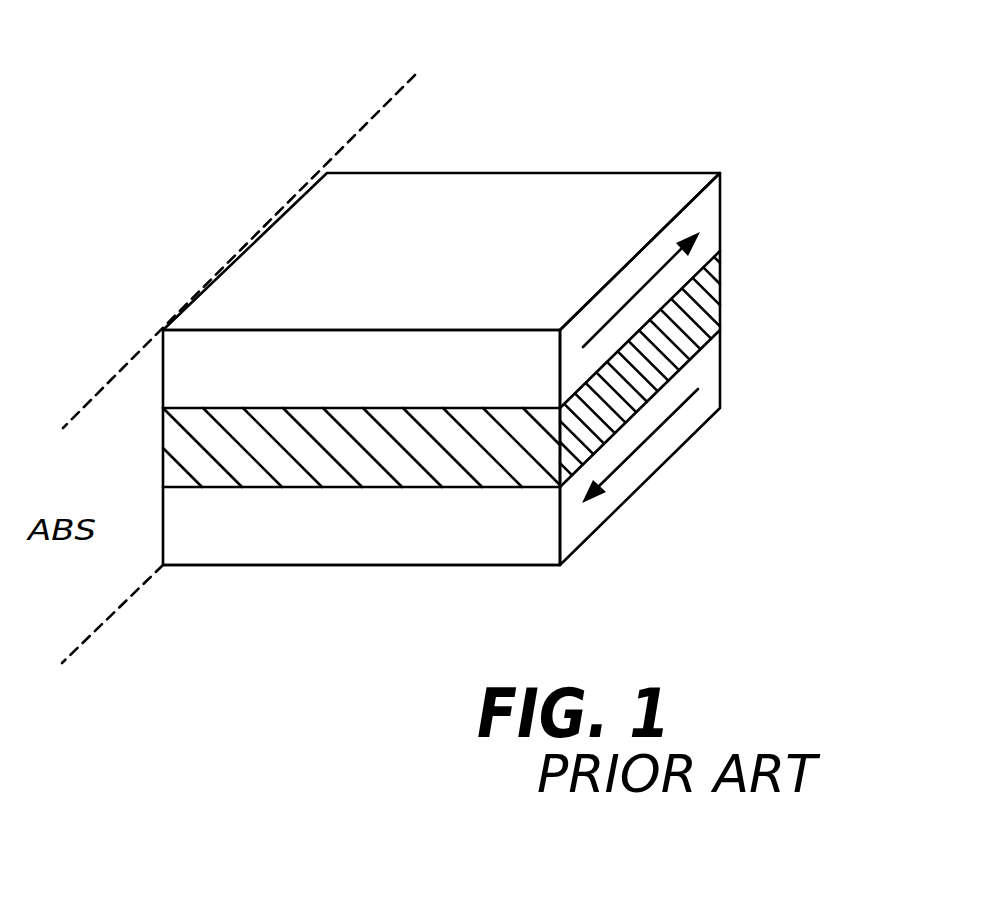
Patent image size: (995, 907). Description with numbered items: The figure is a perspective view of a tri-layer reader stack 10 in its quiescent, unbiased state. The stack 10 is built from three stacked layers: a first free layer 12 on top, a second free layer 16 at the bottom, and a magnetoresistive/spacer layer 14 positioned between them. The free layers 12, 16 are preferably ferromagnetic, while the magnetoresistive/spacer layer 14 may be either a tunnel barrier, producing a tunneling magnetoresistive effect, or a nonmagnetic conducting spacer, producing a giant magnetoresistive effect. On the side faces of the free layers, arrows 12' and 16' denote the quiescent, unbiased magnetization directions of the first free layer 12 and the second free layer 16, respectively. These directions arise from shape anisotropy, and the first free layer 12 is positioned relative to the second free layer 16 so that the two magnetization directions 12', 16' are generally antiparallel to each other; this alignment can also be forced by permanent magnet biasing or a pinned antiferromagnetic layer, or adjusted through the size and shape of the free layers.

The tri-layer reader stack 10 is at (768, 126).
The first free layer 12 is at (441, 329).
The magnetoresistive/spacer layer 14 is at (382, 463).
The second free layer 16 is at (361, 537).
The arrow denoting magnetization direction of first free layer 12' is at (718, 257).
The arrow denoting magnetization direction of second free layer 16' is at (706, 446).